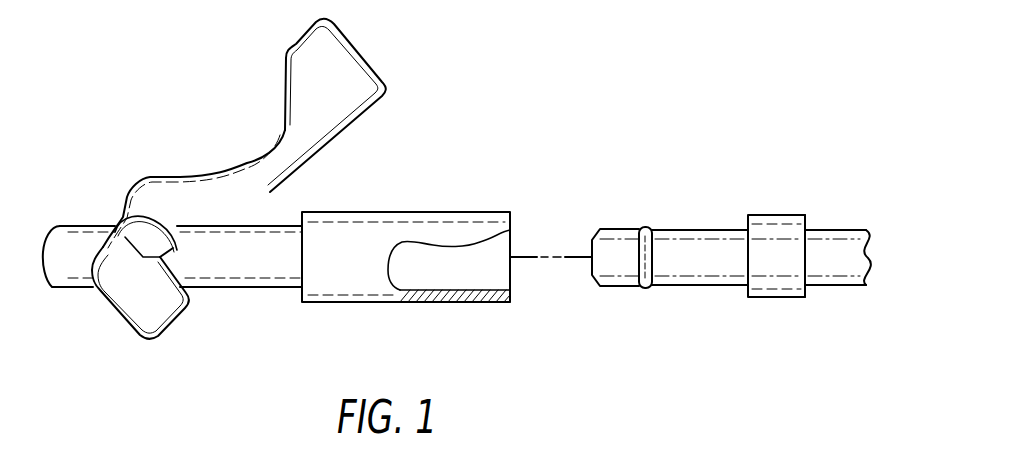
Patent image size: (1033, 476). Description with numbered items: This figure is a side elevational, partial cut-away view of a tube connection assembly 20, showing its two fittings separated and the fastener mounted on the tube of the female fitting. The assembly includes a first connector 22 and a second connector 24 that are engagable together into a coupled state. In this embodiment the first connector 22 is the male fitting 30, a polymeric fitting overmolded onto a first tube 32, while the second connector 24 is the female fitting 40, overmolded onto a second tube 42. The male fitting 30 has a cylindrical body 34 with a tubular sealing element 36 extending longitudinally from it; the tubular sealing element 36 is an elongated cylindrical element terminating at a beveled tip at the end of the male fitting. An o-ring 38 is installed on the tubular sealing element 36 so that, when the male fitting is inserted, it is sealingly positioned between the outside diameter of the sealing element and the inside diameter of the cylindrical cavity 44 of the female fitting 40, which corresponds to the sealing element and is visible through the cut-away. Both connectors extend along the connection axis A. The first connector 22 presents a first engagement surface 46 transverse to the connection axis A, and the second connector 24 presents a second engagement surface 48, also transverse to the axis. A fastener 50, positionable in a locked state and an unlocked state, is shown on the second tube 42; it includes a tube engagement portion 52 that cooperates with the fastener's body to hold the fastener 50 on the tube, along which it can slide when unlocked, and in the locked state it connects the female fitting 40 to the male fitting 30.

The tube connection assembly 20 is at (628, 100).
The first connector 22 is at (700, 337).
The second connector 24 is at (487, 138).
The male fitting 30 is at (775, 214).
The first tube 32 is at (838, 292).
The cylindrical body 34 is at (782, 278).
The tubular sealing element 36 is at (681, 270).
The o-ring 38 is at (645, 225).
The female fitting 40 is at (405, 212).
The second tube 42 is at (86, 238).
The cylindrical cavity 44 is at (472, 268).
The first engagement surface 46 is at (806, 218).
The second engagement surface 48 is at (290, 207).
The fastener 50 is at (283, 97).
The tube engagement portion 52 is at (122, 317).
The connection axis A is at (553, 260).